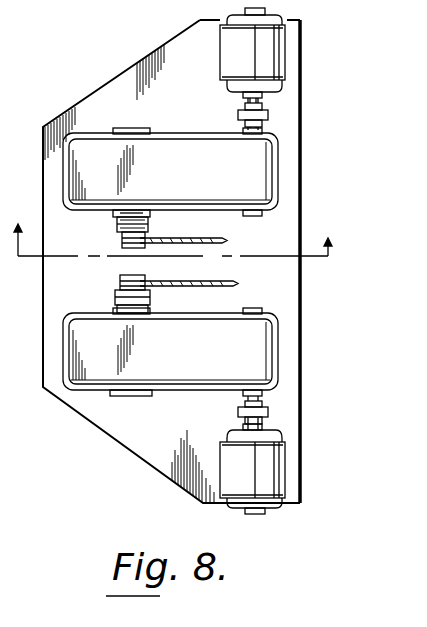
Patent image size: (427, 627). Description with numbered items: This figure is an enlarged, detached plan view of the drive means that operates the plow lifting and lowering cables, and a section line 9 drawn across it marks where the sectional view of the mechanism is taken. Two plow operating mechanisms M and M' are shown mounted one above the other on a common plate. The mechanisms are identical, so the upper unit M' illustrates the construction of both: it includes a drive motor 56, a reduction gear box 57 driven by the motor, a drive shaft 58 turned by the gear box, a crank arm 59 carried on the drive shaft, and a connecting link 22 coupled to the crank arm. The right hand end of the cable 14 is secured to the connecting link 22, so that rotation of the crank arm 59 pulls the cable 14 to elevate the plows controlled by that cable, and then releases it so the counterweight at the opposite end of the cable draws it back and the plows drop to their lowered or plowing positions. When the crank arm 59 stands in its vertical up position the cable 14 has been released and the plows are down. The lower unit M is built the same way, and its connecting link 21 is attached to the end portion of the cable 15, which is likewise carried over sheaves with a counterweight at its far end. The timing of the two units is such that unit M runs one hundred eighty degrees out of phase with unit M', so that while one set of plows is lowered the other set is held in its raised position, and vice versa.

The drive motor 56 is at (288, 55).
The reduction gear box 57 is at (202, 133).
The plow operating mechanism M' is at (202, 172).
The drive shaft 58 is at (116, 225).
The crank arm 59 is at (149, 224).
The connecting link 22 is at (121, 241).
The cable 14 is at (219, 240).
The section line 9- 9 is at (174, 230).
The connecting link 21 is at (119, 282).
The cable 15 is at (228, 285).
The plow operating mechanism M is at (200, 352).